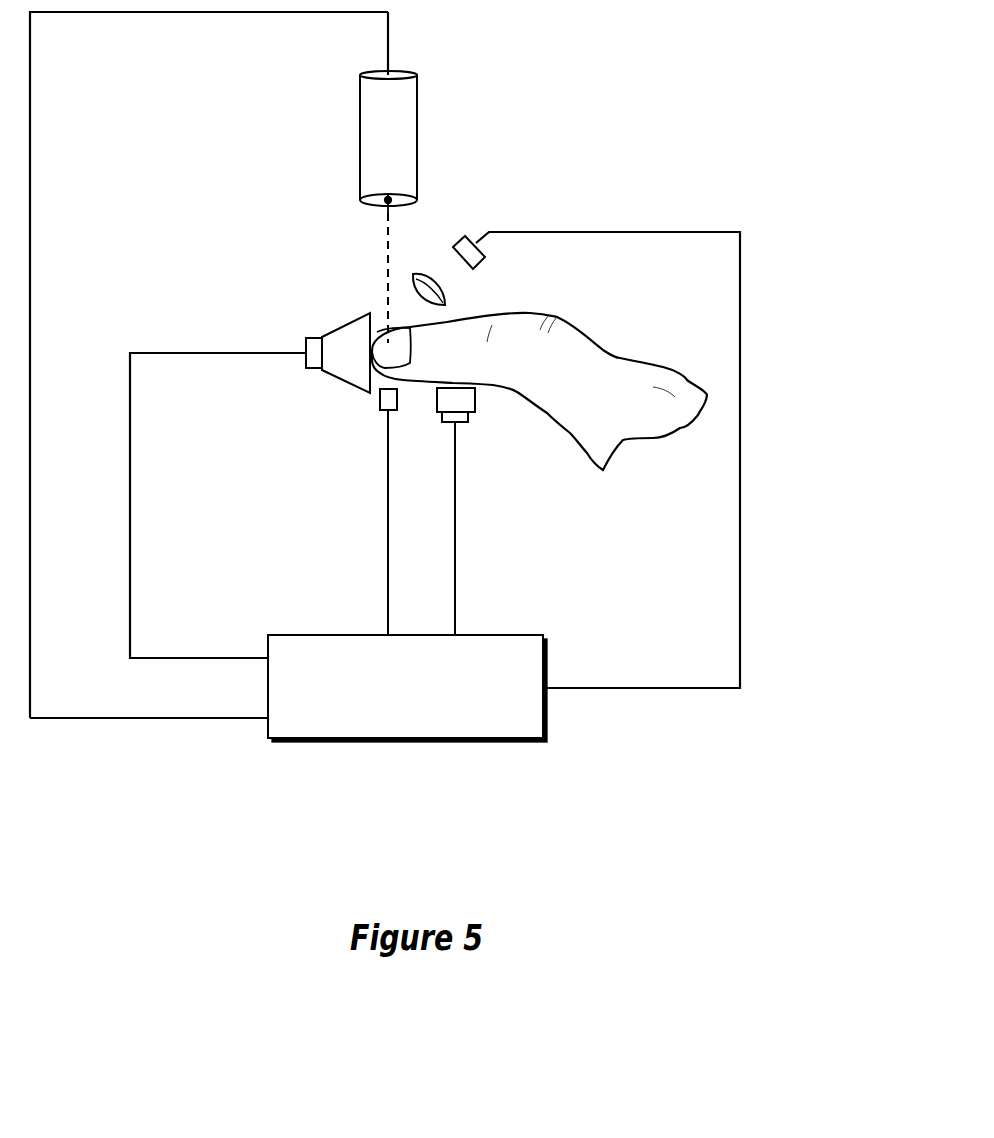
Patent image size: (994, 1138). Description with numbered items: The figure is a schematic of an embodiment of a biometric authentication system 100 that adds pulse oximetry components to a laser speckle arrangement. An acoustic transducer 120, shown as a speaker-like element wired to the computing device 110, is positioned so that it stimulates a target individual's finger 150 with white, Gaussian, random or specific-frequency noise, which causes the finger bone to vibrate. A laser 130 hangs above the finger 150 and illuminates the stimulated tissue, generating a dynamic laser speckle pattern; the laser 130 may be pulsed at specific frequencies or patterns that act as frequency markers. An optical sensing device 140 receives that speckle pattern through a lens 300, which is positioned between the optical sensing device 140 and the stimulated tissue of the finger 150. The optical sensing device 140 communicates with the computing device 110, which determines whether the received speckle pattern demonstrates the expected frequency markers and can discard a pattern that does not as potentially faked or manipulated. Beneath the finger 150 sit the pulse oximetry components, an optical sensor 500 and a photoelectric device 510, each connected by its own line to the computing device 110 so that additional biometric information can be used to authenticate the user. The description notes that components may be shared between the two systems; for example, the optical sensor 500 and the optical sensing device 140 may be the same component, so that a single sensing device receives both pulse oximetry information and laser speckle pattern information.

The biometric authentication system 100 is at (611, 42).
The computing device 110 is at (407, 688).
The acoustic transducer 120 is at (334, 329).
The laser 130 is at (417, 126).
The optical sensing device 140 is at (465, 239).
The finger 150 is at (613, 358).
The lens 300 is at (447, 298).
The optical sensor 500 is at (384, 411).
The photoelectric device 510 is at (462, 422).